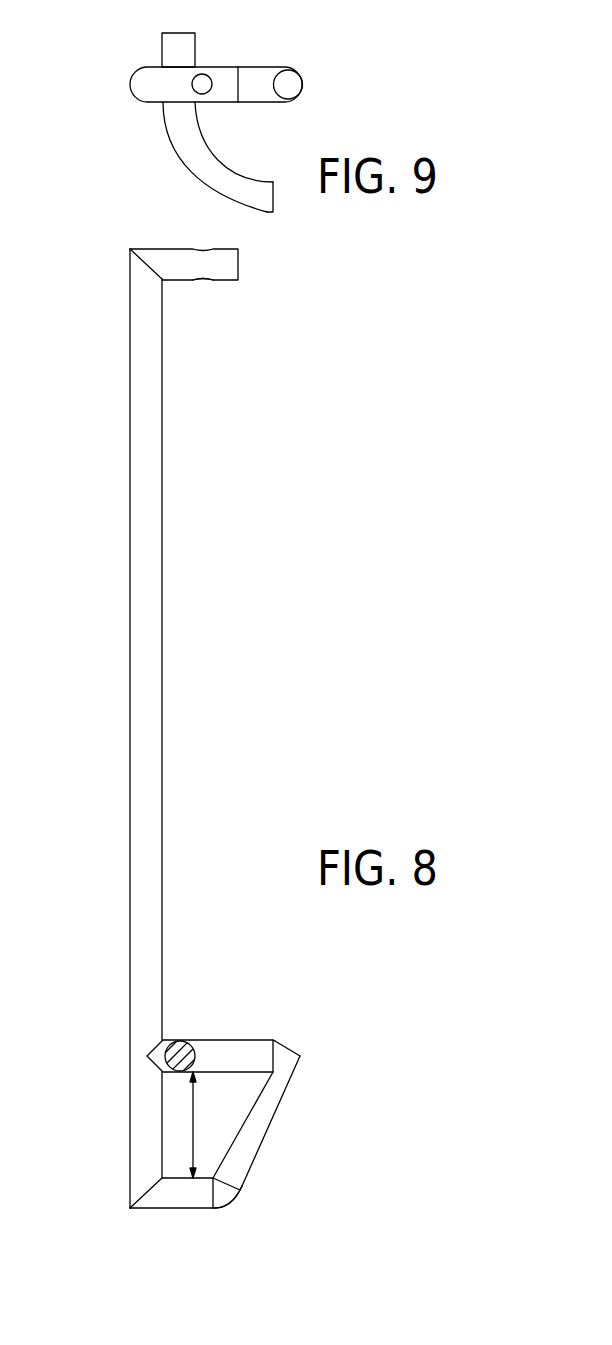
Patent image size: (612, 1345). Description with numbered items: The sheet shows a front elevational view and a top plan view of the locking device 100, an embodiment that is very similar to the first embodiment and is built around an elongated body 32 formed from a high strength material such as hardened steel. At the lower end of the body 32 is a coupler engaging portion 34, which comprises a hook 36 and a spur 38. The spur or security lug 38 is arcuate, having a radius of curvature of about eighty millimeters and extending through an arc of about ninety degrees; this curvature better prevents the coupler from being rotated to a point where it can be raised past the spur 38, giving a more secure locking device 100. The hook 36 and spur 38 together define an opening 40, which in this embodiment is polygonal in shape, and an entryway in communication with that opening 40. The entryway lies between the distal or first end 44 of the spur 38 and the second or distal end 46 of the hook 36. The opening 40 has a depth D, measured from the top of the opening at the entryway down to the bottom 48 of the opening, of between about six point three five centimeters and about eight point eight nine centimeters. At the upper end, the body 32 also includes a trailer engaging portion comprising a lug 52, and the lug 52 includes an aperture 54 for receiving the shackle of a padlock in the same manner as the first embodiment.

In FIG. 8, the elongated body 32 is at (157, 668).
In FIG. 8, the coupler engaging portion 34 is at (106, 1188).
In FIG. 9, the hook 36 is at (265, 103).
In FIG. 8, the hook 36 is at (272, 1095).
In FIG. 9, the spur 38 is at (188, 148).
In FIG. 8, the spur 38 is at (227, 1050).
In FIG. 8, the opening 40 is at (222, 1127).
In FIG. 9, the first end of the spur 44 is at (274, 197).
In FIG. 8, the first end of the spur 44 is at (278, 1048).
In FIG. 9, the second end of the hook 46 is at (292, 83).
In FIG. 8, the second end of the hook 46 is at (297, 1053).
In FIG. 8, the bottom of the opening 48 is at (178, 1173).
In FIG. 9, the lug 52 is at (232, 77).
In FIG. 8, the lug 52 is at (162, 247).
In FIG. 9, the aperture 54 is at (203, 76).
In FIG. 8, the aperture 54 is at (200, 281).
In FIG. 8, the locking device 100 is at (303, 385).
In FIG. 8, the depth of the opening D is at (193, 1123).